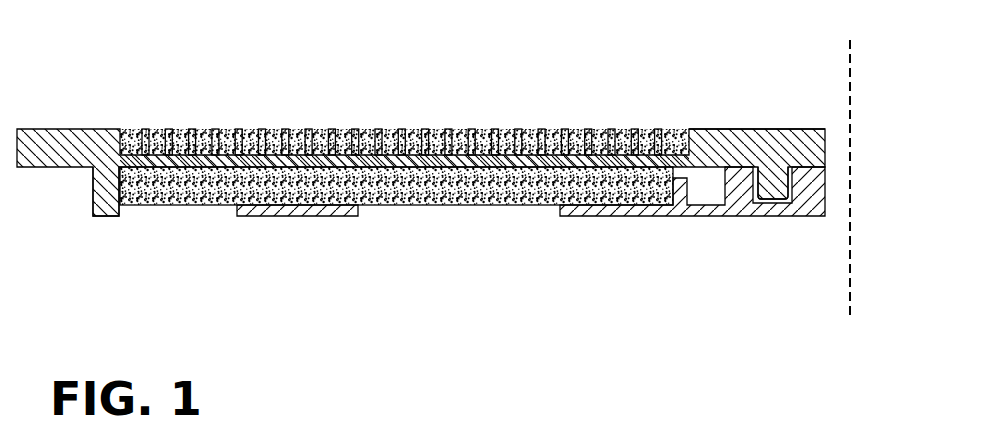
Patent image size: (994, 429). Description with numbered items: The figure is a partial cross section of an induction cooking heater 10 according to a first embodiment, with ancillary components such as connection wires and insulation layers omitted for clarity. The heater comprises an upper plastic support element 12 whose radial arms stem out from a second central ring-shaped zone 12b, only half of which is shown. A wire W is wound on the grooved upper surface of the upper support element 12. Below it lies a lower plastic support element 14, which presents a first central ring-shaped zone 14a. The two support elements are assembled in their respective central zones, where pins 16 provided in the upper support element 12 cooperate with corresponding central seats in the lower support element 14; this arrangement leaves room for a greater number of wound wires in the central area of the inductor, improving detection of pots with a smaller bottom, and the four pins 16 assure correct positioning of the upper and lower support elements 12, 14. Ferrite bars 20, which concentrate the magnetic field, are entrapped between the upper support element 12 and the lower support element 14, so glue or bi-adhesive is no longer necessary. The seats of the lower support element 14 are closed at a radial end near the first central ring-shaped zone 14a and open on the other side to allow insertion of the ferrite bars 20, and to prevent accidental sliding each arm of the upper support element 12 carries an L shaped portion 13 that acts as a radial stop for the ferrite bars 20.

The induction cooking heater 10 is at (776, 62).
The upper plastic support element 12 is at (694, 118).
The second central ring-shaped zone 12b is at (805, 128).
The L shaped portion 13 is at (107, 185).
The lower plastic support element 14 is at (630, 244).
The first central ring-shaped zone 14a is at (884, 180).
The pins 16 is at (778, 181).
The ferrite bars 20 is at (495, 206).
The wire W is at (224, 129).